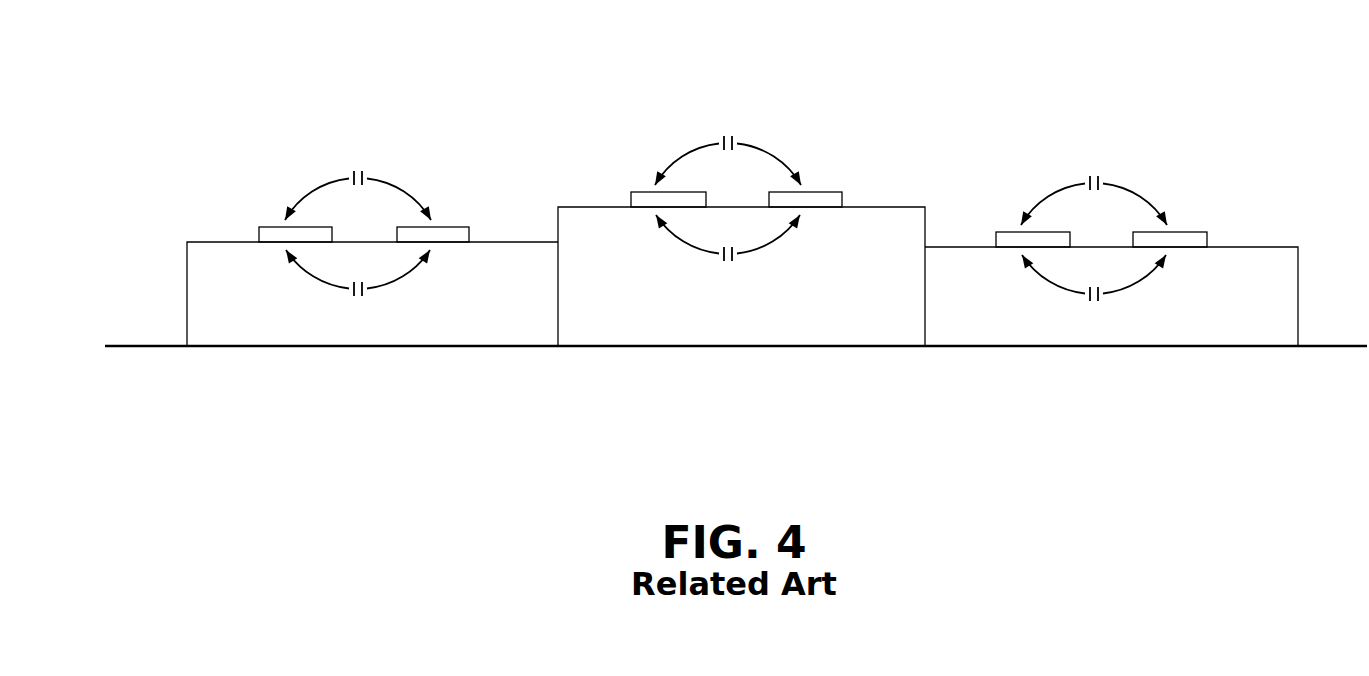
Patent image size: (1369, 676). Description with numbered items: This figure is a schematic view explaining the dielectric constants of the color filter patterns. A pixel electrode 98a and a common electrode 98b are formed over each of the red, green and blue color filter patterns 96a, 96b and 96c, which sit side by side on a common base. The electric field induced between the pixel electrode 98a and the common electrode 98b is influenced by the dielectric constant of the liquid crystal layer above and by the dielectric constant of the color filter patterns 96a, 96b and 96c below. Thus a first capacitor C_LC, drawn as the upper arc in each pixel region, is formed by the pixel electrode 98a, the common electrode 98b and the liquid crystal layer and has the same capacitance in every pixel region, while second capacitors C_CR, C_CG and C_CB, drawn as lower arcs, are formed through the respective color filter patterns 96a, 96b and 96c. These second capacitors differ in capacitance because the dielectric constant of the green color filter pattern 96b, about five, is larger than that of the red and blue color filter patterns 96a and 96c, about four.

The red color filter pattern 96a is at (512, 332).
The green color filter pattern 96b is at (737, 332).
The blue color filter pattern 96c is at (1220, 333).
The pixel electrode 98a is at (270, 227).
The common electrode 98b is at (458, 233).